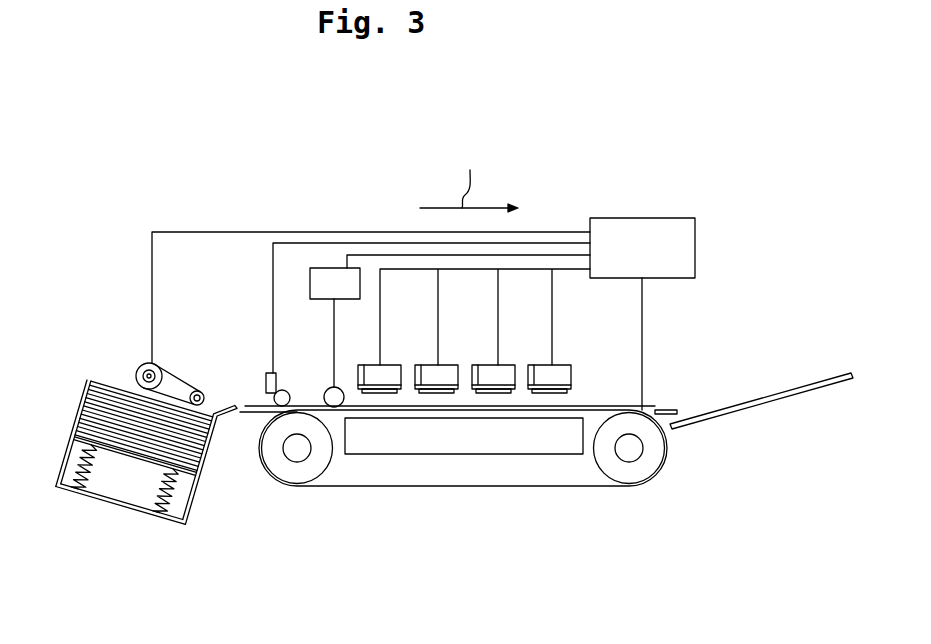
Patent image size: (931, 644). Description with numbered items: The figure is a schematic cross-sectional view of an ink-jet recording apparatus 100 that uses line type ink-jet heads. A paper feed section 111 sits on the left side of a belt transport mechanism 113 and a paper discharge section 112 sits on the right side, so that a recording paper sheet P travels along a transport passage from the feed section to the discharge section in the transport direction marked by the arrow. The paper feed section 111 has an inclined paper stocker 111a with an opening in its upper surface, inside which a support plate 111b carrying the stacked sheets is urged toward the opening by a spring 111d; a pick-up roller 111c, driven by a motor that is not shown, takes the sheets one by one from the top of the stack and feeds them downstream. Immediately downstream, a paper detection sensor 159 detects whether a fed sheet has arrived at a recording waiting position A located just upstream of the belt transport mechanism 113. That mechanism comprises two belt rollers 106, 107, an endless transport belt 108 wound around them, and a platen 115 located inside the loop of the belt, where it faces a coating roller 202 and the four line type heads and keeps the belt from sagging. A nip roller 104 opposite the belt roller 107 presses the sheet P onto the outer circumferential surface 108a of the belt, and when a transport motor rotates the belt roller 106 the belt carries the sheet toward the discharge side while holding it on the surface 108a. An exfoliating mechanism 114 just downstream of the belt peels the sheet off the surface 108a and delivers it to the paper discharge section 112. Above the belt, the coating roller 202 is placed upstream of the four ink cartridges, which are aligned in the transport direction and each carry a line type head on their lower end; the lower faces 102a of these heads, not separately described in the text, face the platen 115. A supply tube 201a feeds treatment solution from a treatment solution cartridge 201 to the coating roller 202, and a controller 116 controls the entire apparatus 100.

The ink-jet recording apparatus 100 is at (740, 172).
The ejection surface 102a is at (448, 393).
The nip roller 104 is at (278, 404).
The belt roller 106 is at (645, 470).
The belt roller 107 is at (285, 470).
The transport belt 108 is at (410, 488).
The outer circumferential surface 108a is at (329, 488).
The paper feed section 111 is at (138, 413).
The paper stocker 111a is at (125, 508).
The support plate 111b is at (192, 523).
The pick-up roller 111c is at (188, 387).
The spring 111d is at (58, 493).
The paper discharge section 112 is at (765, 368).
The belt transport mechanism 113 is at (440, 477).
The exfoliating mechanism 114 is at (665, 411).
The platen 115 is at (383, 442).
The controller 116 is at (647, 217).
The paper detection sensor 159 is at (268, 373).
The treatment solution cartridge 201 is at (335, 268).
The supply tube 201a is at (334, 347).
The coating roller 202 is at (324, 398).
The recording paper sheet P is at (105, 388).
The recording waiting position A is at (245, 406).